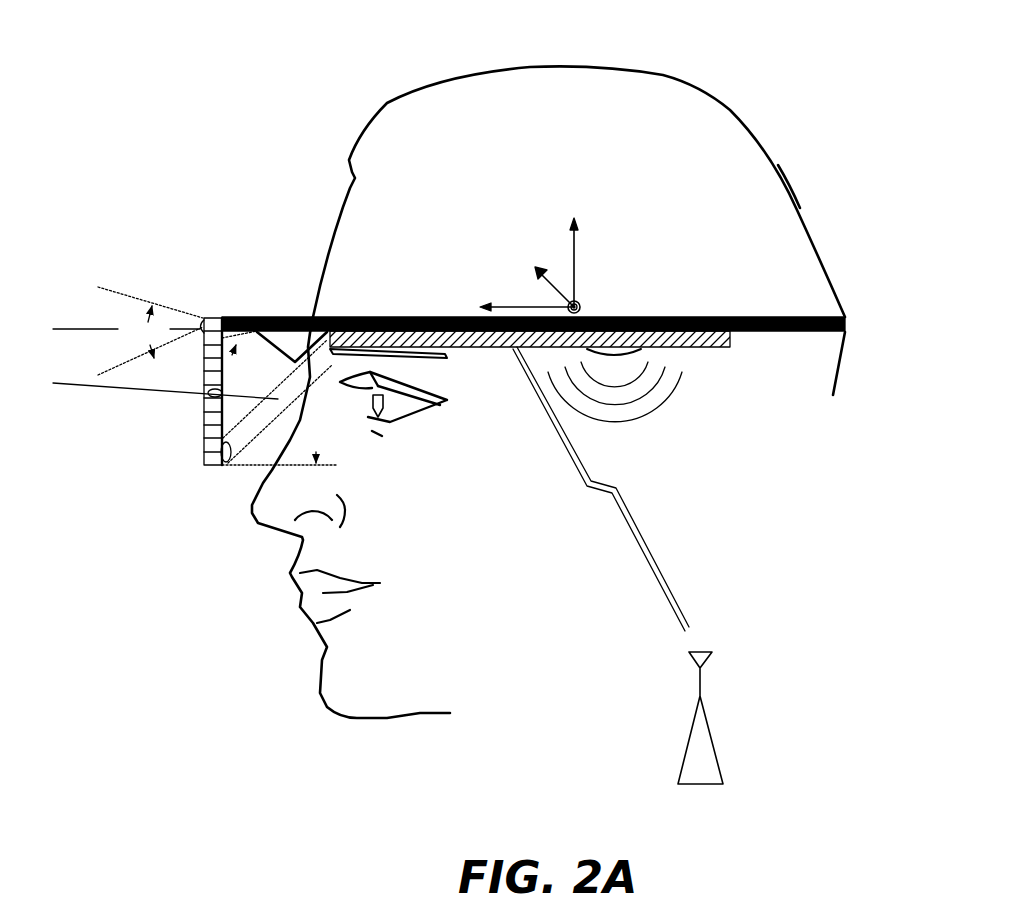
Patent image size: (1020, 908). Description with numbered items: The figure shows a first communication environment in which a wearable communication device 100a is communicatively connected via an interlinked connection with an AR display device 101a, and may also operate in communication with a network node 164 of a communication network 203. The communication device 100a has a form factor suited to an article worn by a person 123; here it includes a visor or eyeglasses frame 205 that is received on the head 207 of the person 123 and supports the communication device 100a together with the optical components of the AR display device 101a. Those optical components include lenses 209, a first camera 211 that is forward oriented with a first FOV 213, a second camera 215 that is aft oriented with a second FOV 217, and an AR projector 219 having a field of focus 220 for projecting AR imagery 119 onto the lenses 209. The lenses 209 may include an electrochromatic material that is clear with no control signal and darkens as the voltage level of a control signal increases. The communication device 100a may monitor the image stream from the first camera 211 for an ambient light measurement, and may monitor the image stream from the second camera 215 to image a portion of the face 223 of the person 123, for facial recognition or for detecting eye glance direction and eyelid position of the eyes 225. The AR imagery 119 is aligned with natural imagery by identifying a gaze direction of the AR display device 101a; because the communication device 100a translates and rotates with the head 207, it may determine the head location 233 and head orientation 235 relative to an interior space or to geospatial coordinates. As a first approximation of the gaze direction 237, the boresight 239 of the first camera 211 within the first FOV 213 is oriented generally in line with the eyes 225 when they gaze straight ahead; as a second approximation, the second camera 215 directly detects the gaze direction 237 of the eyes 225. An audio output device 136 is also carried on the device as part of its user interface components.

The communication device 100a is at (138, 124).
The AR display device 101a is at (279, 298).
The AR imagery 119 is at (210, 393).
The person 123 is at (735, 113).
The audio output device 136 is at (625, 358).
The network node 164 is at (714, 746).
The communication network 203 is at (770, 659).
The visor or eyeglasses frame 205 is at (763, 317).
The head 207 is at (780, 168).
The lenses 209 is at (205, 466).
The first camera 211 is at (203, 318).
The first FOV 213 is at (145, 332).
The second camera 215 is at (224, 466).
The second FOV 217 is at (296, 397).
The AR projector 219 is at (288, 338).
The field of focus 220 is at (265, 392).
The face 223 is at (272, 571).
The eyes 225 is at (348, 376).
The head location 233 is at (582, 304).
The head orientation 235 is at (518, 283).
The gaze direction 237 is at (93, 392).
The boresight 239 is at (63, 328).